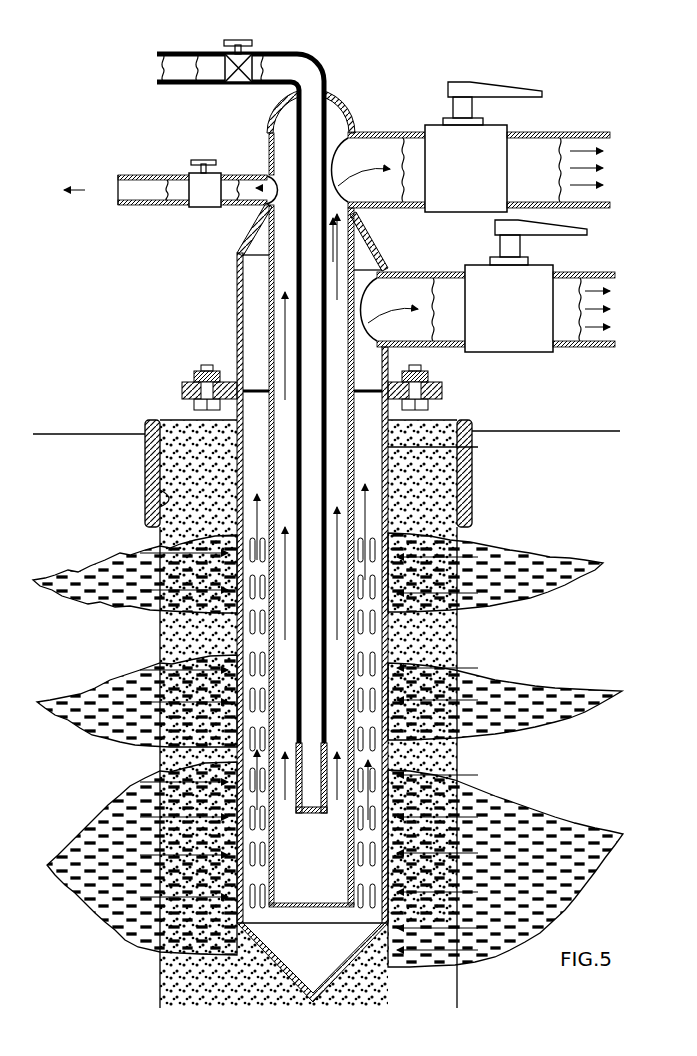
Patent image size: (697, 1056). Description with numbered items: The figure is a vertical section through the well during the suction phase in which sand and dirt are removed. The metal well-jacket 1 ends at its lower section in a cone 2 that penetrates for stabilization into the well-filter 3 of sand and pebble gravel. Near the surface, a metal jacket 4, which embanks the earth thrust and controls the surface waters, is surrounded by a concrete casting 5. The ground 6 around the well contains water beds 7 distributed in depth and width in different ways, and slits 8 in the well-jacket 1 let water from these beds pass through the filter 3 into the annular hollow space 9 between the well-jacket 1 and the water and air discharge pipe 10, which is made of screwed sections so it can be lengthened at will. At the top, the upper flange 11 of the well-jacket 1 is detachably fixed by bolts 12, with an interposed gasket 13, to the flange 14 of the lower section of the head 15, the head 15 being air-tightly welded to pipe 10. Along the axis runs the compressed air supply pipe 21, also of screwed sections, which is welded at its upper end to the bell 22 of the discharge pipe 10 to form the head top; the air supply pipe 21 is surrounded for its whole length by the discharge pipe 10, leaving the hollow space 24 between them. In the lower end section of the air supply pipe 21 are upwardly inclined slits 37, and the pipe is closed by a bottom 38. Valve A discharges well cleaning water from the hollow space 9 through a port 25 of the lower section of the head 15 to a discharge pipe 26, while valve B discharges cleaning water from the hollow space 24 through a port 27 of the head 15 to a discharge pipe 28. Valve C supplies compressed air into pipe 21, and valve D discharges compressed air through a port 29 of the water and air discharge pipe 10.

The well-jacket 1 is at (441, 446).
The cone 2 is at (457, 984).
The well-filter 3 is at (160, 989).
The metal jacket 4 is at (160, 511).
The concrete casting 5 is at (150, 472).
The ground 6 is at (58, 471).
The water beds 7 is at (80, 572).
The slits 8 is at (385, 626).
The annular hollow space 9 is at (390, 476).
The water and air discharge pipe 10 is at (271, 510).
The upper flange 11 is at (185, 408).
The bolts 12 is at (207, 367).
The gasket 13 is at (187, 393).
The flange 14 is at (187, 383).
The head 15 is at (237, 318).
The compressed air supply pipe 21 is at (297, 450).
The bell 22 is at (345, 112).
The hollow space 24 is at (287, 268).
The port 25 is at (389, 304).
The discharge pipe 26 is at (607, 348).
The port 27 is at (368, 164).
The discharge pipe 28 is at (597, 133).
The port 29 is at (265, 177).
The upwardly inclined slits 37 is at (326, 745).
The bottom 38 is at (318, 816).
The valve A is at (498, 325).
The valve B is at (452, 188).
The valve C is at (238, 80).
The valve D is at (197, 193).